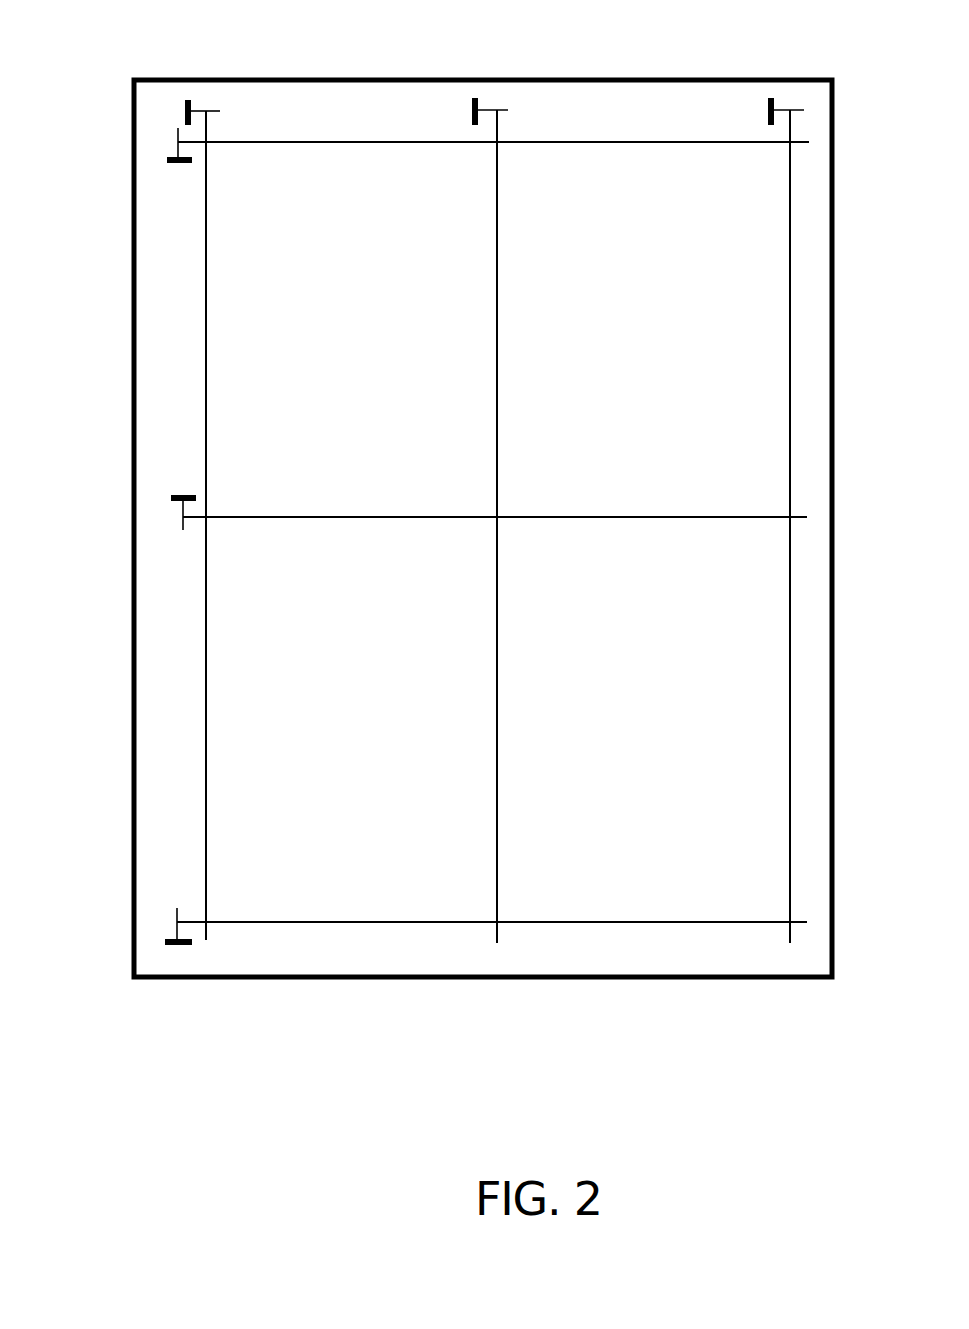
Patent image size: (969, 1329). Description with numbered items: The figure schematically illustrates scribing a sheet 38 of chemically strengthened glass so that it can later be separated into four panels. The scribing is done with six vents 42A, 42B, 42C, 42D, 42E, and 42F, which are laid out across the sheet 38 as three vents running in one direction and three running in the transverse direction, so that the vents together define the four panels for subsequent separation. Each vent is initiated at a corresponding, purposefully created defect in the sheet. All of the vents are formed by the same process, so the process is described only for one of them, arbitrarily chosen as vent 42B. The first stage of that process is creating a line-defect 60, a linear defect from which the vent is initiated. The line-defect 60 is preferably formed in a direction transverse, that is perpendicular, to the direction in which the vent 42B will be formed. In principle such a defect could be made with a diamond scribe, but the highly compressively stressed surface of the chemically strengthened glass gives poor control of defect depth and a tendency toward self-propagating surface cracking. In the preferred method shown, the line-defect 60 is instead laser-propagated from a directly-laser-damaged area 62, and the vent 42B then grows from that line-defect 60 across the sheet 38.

The sheet 38 is at (326, 988).
The vent 42A is at (357, 138).
The vent 42B is at (283, 513).
The vent 42C is at (287, 920).
The vent 42D is at (205, 250).
The vent 42E is at (497, 837).
The vent 42F is at (782, 268).
The line-defect 60 is at (180, 525).
The directly-laser-damaged area 62 is at (172, 495).